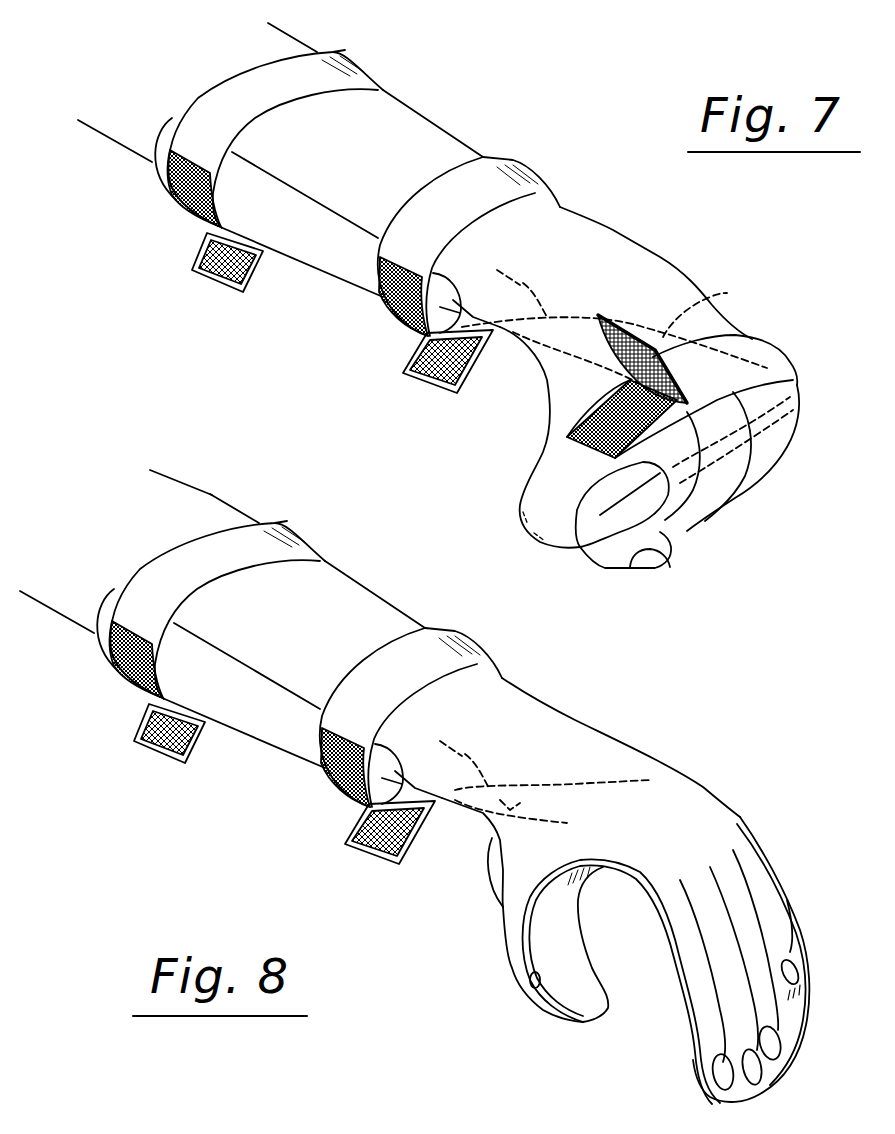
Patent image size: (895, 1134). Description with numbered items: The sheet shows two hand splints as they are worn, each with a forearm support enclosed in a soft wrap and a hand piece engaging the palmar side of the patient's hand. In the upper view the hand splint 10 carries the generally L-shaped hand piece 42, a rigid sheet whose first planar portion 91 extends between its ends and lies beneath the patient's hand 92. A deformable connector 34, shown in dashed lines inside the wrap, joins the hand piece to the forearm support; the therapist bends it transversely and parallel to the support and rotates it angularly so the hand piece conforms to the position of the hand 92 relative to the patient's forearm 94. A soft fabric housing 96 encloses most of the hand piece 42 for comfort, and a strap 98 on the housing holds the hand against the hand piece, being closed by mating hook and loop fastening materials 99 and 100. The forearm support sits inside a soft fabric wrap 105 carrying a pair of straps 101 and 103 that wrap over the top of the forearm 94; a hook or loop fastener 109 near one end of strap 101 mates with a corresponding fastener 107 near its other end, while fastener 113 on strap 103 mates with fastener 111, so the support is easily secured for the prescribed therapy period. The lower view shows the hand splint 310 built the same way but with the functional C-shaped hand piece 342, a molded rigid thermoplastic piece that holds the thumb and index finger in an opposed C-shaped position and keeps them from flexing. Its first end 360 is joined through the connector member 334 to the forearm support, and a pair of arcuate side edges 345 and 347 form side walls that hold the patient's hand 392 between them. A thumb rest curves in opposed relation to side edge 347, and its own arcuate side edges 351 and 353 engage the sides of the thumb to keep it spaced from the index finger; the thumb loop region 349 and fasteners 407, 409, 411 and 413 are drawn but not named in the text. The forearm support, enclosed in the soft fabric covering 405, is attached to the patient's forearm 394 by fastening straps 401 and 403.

In FIG. 7, the hand splint 10 is at (472, 402).
In FIG. 7, the deformable connector 34 is at (538, 300).
In FIG. 7, the L-shaped hand piece 42 is at (765, 444).
In FIG. 7, the first planar portion 91 is at (712, 297).
In FIG. 7, the patient's hand 92 is at (662, 263).
In FIG. 7, the patient's forearm 94 is at (420, 119).
In FIG. 7, the soft fabric housing 96 is at (643, 492).
In FIG. 7, the strap 98 is at (772, 347).
In FIG. 7, the hook and loop fastening material 99 is at (660, 378).
In FIG. 7, the hook and loop fastening material 100 is at (580, 428).
In FIG. 7, the strap 101 is at (533, 188).
In FIG. 7, the strap 103 is at (360, 72).
In FIG. 7, the soft fabric housing or wrap 105 is at (342, 281).
In FIG. 7, the hook or loop fastener 107 is at (403, 313).
In FIG. 7, the hook or loop fastener 109 is at (460, 381).
In FIG. 7, the hook or loop fastener 111 is at (174, 196).
In FIG. 7, the hook or loop fastener 113 is at (196, 255).
In FIG. 8, the hand splint 310 is at (402, 879).
In FIG. 8, the connector member 334 is at (481, 772).
In FIG. 8, the functional C-shaped hand piece 342 is at (740, 814).
In FIG. 8, the arcuate side edge 345 is at (771, 878).
In FIG. 8, the arcuate side edge 347 is at (680, 956).
In FIG. 8, the thumb loop 349 is at (582, 966).
In FIG. 8, the arcuate side edge 351 is at (530, 997).
In FIG. 8, the arcuate side edge 353 is at (578, 928).
In FIG. 8, the first end 360 is at (560, 823).
In FIG. 8, the patient's hand 392 is at (620, 765).
In FIG. 8, the patient's forearm 394 is at (362, 599).
In FIG. 8, the strap 401 is at (475, 661).
In FIG. 8, the strap 403 is at (303, 544).
In FIG. 8, the soft fabric covering 405 is at (286, 752).
In FIG. 8, the wrist strap fastener pad 407 is at (345, 785).
In FIG. 8, the wrist strap tab 409 is at (403, 859).
In FIG. 8, the proximal strap fastener pad 411 is at (118, 669).
In FIG. 8, the proximal strap tab 413 is at (140, 730).